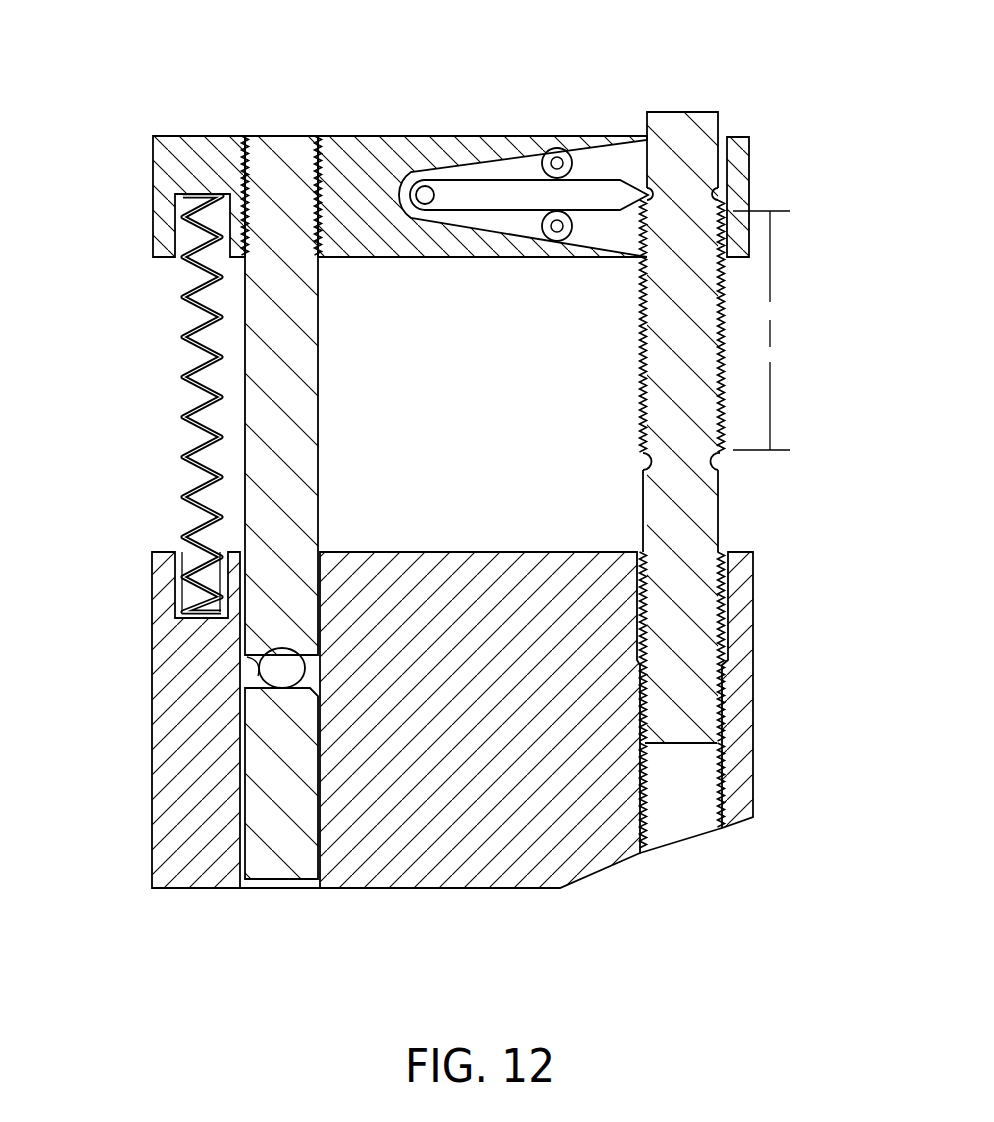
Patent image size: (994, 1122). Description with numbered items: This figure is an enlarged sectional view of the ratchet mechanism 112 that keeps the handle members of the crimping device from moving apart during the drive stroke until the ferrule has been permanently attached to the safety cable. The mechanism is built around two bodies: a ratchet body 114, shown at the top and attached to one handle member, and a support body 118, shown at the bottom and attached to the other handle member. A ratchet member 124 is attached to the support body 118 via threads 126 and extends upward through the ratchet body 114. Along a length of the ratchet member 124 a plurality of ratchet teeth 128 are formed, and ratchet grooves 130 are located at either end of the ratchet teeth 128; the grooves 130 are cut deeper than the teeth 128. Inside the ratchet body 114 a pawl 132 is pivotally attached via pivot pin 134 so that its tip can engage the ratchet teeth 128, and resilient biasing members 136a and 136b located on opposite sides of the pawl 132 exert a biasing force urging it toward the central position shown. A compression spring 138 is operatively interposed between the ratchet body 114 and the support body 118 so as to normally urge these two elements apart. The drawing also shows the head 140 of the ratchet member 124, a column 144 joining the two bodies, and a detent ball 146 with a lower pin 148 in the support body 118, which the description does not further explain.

The ratchet mechanism 112 is at (262, 77).
The ratchet body 114 is at (400, 146).
The support body 118 is at (505, 857).
The ratchet member 124 is at (694, 398).
The threads 126 is at (722, 784).
The ratchet teeth 128 is at (642, 394).
The ratchet grooves 130 is at (728, 196).
The pawl 132 is at (581, 190).
The pivot pin 134 is at (425, 200).
The resilient biasing member 136a is at (556, 160).
The resilient biasing member 136b is at (557, 228).
The compression spring 138 is at (185, 382).
The bolt head 140 is at (655, 195).
The column 144 is at (298, 408).
The detent ball 146 is at (240, 672).
The lower pin 148 is at (240, 690).